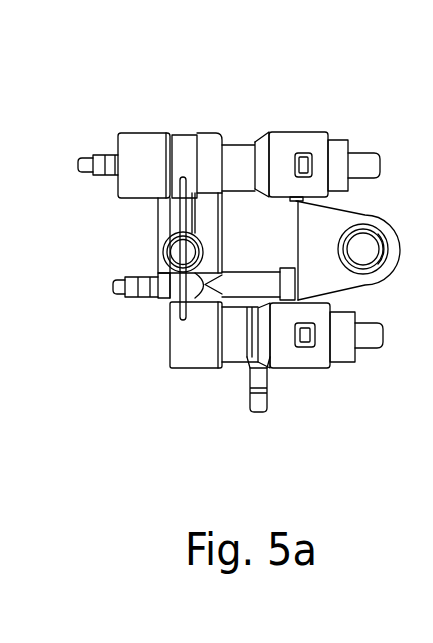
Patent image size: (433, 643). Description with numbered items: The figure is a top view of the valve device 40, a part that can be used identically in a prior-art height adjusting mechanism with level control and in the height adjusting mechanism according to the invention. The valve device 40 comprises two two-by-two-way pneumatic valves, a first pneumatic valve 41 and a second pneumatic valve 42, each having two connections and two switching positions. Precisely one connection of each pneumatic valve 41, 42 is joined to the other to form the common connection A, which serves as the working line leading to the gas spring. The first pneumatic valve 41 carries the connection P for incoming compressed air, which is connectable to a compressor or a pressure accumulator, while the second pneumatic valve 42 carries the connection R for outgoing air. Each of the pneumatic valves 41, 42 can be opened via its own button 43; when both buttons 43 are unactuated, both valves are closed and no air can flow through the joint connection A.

The valve device 40 is at (237, 124).
The first pneumatic valve 41 is at (285, 147).
The second pneumatic valve 42 is at (290, 353).
The button 43 is at (363, 160).
The connection for incoming air P is at (97, 176).
The common connection A is at (130, 295).
The connection for outgoing air R is at (253, 395).